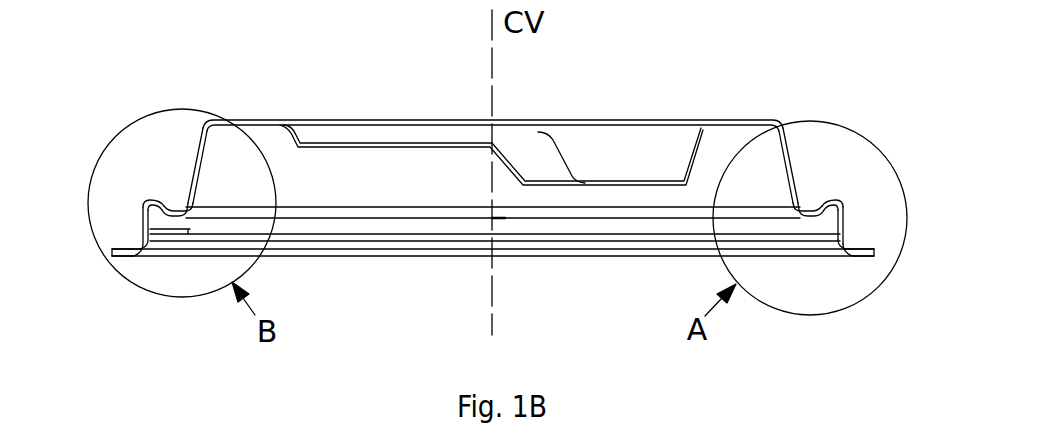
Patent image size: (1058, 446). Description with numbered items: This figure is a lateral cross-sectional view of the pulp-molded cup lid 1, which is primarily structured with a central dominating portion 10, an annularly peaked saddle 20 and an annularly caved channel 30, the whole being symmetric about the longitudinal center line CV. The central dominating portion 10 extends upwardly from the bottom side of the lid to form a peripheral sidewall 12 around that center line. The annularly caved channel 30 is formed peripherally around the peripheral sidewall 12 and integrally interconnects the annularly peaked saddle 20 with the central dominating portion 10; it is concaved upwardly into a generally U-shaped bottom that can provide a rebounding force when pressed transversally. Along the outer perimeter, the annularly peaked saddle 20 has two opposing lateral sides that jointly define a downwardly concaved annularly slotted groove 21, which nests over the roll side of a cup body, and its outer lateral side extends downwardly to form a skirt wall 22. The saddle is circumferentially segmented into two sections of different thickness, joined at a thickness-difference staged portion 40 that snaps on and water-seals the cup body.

The pulp-molded cup lid 1 is at (66, 97).
The central dominating portion 10 is at (728, 120).
The peripheral sidewall 12 is at (789, 158).
The annularly peaked saddle 20 is at (152, 199).
The annularly slotted groove 21 is at (828, 215).
The skirt wall 22 is at (867, 243).
The annularly caved channel 30 is at (807, 205).
The thickness-difference staged portion 40 is at (183, 228).